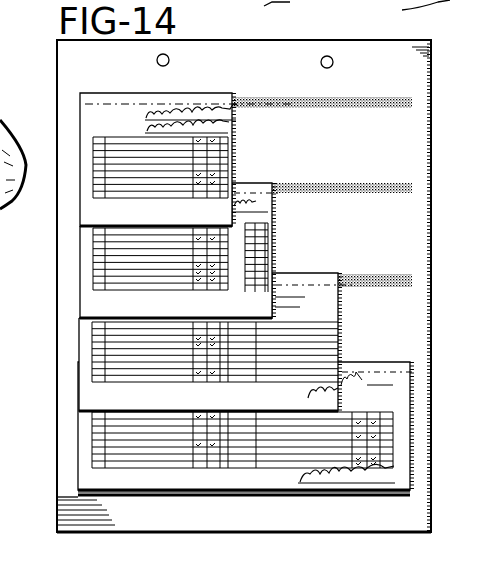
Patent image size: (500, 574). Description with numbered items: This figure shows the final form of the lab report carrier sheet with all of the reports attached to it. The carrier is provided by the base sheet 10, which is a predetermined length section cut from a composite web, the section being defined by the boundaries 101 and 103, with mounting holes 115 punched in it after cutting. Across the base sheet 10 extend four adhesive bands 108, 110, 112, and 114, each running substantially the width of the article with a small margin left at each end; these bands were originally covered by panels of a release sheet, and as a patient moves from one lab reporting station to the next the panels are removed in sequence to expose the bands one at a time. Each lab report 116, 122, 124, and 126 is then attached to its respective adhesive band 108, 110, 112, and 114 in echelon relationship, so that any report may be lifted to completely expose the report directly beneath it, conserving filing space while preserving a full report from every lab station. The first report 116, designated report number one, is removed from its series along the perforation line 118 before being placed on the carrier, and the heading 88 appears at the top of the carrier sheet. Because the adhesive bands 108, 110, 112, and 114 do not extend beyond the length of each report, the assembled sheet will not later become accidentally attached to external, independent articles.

The base sheet 10 is at (63, 265).
The lab report heading 88 is at (247, 68).
The boundary 101 is at (57, 72).
The boundary 103 is at (452, 34).
The adhesive band 108 is at (373, 364).
The adhesive band 110 is at (405, 278).
The adhesive band 112 is at (357, 190).
The adhesive band 114 is at (357, 105).
The mounting holes 115 is at (162, 55).
The lab report 116 is at (292, 487).
The perforation line 118 is at (79, 475).
The lab report 122 is at (327, 344).
The lab report 124 is at (270, 250).
The lab report 126 is at (230, 155).